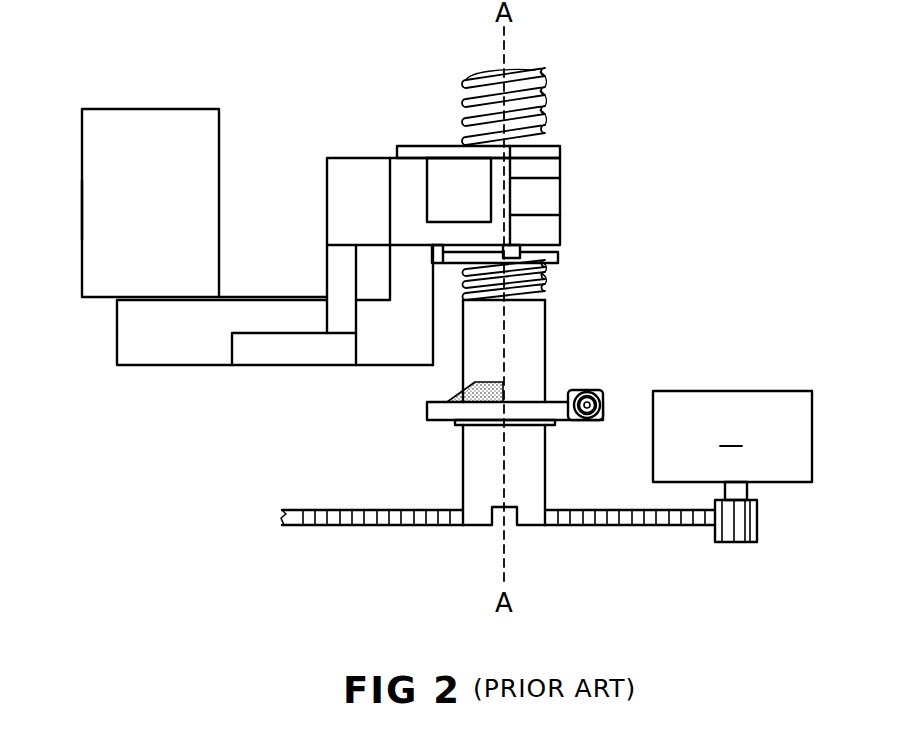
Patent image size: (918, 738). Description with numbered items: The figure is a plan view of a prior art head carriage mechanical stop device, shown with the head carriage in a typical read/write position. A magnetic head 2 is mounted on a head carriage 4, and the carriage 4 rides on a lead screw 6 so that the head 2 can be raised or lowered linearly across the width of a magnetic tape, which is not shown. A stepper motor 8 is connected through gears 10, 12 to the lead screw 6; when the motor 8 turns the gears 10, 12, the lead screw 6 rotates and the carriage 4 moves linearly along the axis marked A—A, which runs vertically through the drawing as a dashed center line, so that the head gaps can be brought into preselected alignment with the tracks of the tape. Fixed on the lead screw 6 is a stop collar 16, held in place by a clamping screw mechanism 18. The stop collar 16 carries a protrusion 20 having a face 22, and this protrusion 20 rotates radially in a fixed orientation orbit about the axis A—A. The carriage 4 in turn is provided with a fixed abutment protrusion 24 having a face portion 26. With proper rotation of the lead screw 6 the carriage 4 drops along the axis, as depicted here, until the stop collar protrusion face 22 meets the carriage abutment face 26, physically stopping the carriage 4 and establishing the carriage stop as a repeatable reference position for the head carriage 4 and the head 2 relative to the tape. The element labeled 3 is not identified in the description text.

The magnetic head 2 is at (168, 108).
The drive unit 3 is at (82, 211).
The head carriage 4 is at (562, 159).
The lead screw 6 is at (476, 81).
The stepper motor 8 is at (732, 436).
The gear 10 is at (757, 530).
The gear 12 is at (614, 527).
The stop collar 16 is at (558, 420).
The clamping screw mechanism 18 is at (601, 390).
The protrusion 20 is at (447, 402).
The face 22 is at (508, 388).
The fixed abutment protrusion 24 is at (521, 246).
The face portion 26 is at (473, 263).